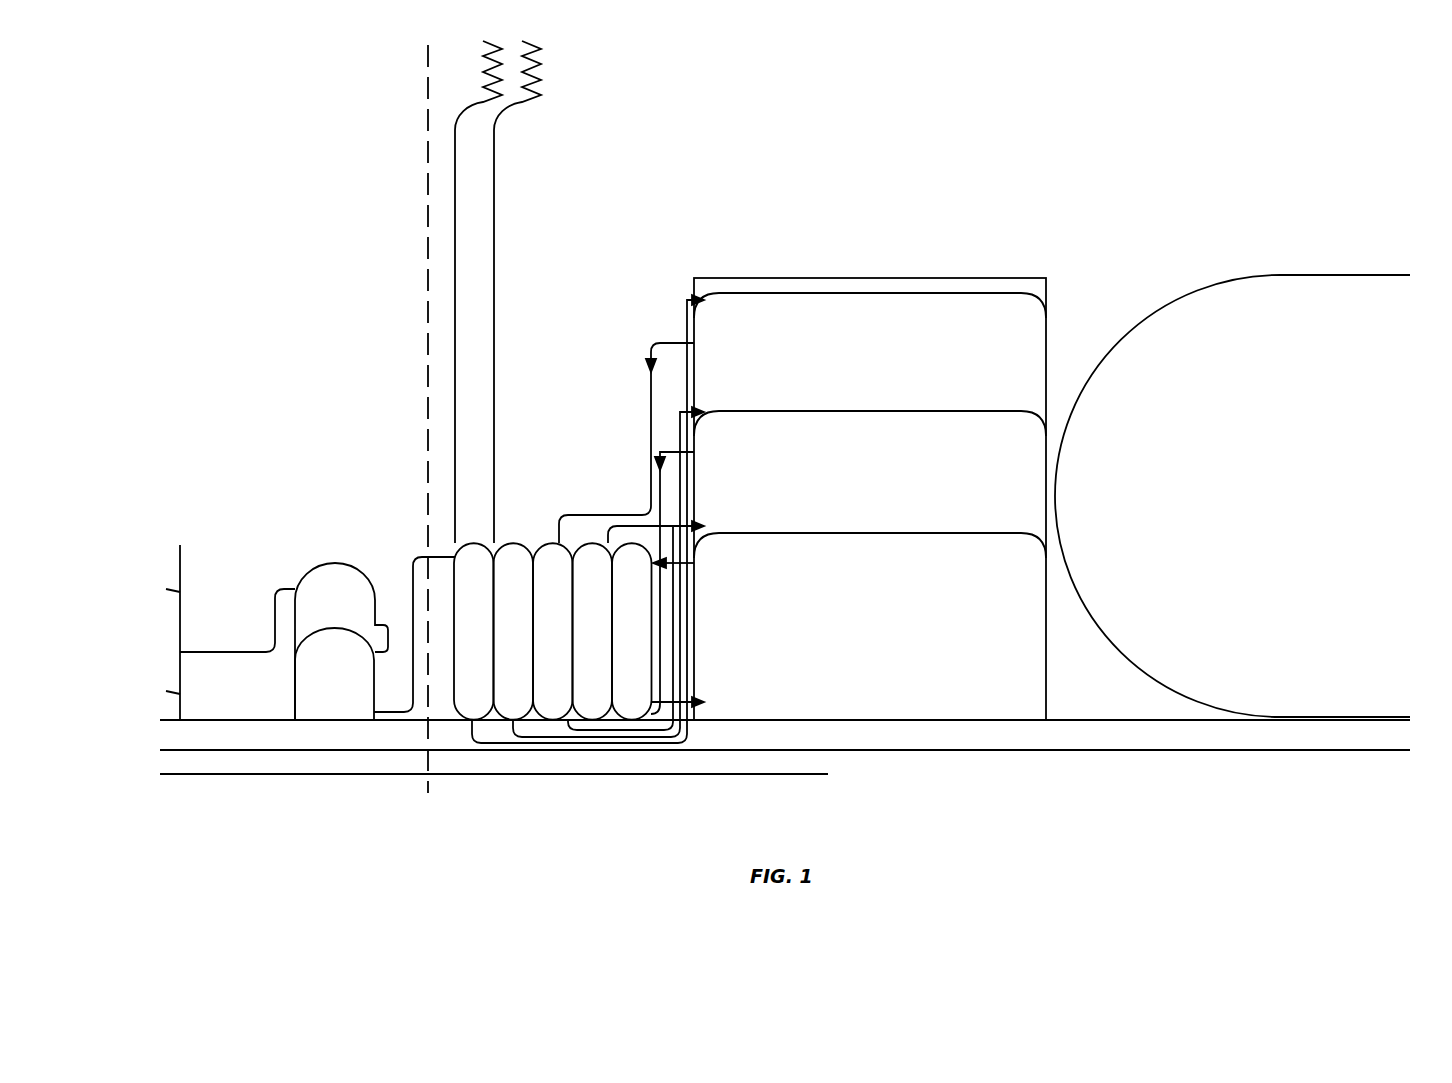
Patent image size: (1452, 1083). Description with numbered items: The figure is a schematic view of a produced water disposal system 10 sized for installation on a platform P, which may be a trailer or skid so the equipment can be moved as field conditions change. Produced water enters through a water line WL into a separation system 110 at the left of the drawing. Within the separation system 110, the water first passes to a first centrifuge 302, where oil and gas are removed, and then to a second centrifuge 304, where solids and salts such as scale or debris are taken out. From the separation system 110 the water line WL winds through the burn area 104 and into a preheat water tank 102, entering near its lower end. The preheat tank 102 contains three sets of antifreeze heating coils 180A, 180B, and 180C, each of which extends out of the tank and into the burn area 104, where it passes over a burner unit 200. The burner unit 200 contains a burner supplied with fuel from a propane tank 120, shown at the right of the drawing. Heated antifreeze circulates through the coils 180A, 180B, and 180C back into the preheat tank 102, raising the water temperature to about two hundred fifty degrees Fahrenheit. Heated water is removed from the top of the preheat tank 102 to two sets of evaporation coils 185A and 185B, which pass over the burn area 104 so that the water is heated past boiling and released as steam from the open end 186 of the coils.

The water disposal system 10 is at (1041, 784).
The preheat water tank 102 is at (885, 467).
The burn area 104 is at (579, 490).
The separation system 110 is at (310, 546).
The propane tank 120 is at (1306, 260).
The antifreeze coil 180A is at (1026, 652).
The antifreeze coil 180B is at (1016, 433).
The antifreeze coil 180C is at (1026, 310).
The evaporation coil 185A is at (479, 554).
The evaporation coil 185B is at (517, 553).
The open end 186 is at (524, 137).
The burner unit 200 is at (597, 773).
The first centrifuge 302 is at (350, 562).
The second centrifuge 304 is at (356, 708).
The platform P is at (912, 742).
The water line WL is at (279, 590).